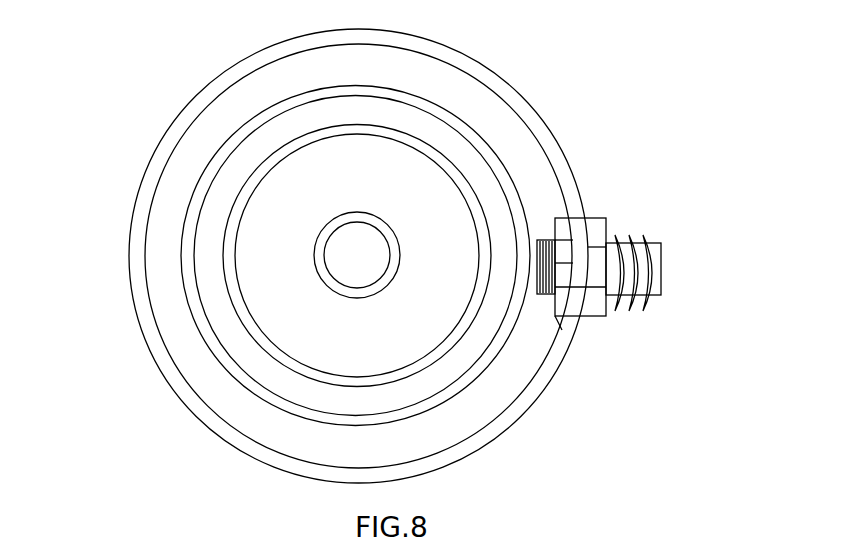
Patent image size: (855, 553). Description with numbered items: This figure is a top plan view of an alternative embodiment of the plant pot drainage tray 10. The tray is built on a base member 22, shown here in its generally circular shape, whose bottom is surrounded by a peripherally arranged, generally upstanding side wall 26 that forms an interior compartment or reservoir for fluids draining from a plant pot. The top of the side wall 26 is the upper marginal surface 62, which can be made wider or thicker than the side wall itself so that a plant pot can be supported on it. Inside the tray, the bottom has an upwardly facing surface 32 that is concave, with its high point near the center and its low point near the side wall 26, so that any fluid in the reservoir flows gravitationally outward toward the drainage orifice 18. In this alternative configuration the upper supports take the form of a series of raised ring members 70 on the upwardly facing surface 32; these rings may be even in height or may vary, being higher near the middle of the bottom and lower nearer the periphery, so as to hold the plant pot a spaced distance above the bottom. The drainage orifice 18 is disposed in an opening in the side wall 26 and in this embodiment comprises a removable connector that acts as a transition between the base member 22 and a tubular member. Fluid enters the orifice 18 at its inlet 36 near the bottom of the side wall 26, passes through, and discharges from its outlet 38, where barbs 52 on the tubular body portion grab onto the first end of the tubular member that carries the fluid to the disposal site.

The drainage tray 10 is at (566, 99).
The drainage orifice 18 is at (639, 221).
The base member 22 is at (579, 166).
The side wall 26 is at (515, 423).
The upwardly facing surface 32 is at (203, 220).
The inlet 36 is at (537, 293).
The outlet 38 is at (670, 267).
The barbs 52 is at (661, 290).
The upper marginal surface 62 is at (470, 63).
The raised ring members 70 is at (326, 237).